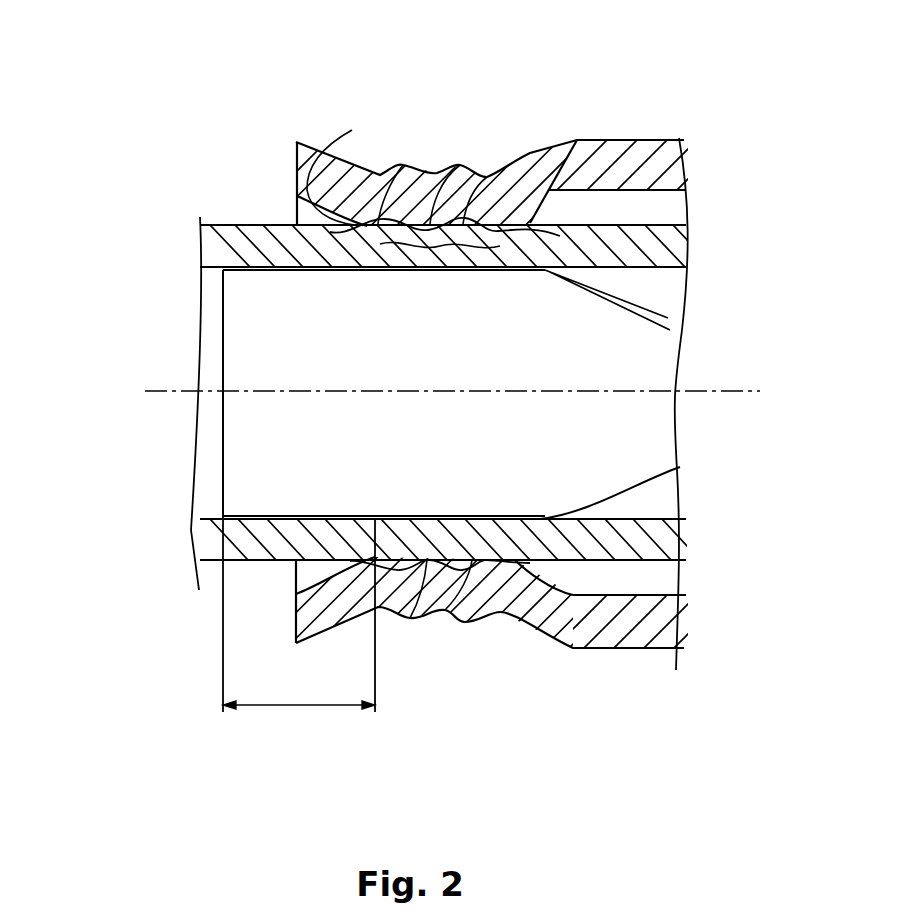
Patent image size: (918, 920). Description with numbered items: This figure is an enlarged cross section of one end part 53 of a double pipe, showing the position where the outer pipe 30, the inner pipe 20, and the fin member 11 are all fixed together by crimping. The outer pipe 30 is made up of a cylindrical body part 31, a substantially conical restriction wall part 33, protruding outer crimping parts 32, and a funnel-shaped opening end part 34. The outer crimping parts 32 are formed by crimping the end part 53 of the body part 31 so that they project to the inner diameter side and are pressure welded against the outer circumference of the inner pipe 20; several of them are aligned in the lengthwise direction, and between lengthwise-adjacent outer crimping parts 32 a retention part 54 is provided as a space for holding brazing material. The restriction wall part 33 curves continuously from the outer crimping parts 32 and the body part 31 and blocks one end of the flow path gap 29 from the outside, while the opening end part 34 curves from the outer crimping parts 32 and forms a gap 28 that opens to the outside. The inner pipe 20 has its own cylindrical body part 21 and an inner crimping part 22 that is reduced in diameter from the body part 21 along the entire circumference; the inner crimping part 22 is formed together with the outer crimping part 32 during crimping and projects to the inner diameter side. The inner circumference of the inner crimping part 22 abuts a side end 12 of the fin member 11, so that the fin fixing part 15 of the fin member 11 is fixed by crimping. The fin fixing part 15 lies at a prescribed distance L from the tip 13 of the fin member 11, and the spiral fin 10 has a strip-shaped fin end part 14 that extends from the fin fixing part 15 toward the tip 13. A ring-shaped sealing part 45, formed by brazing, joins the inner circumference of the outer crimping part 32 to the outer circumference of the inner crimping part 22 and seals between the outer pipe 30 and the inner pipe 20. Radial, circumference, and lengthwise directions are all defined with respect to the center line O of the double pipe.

The spiral fin 10 is at (622, 424).
The fin member 11 is at (68, 276).
The side end of fin member 12 is at (325, 263).
The tip of fin member 13 is at (233, 428).
The fin end part 14 is at (110, 418).
The fin fixing part 15 is at (237, 538).
The inner pipe 20 is at (490, 715).
The body part of inner pipe 21 is at (611, 520).
The inner crimping part 22 is at (423, 617).
The gap 28 is at (298, 210).
The flow path gap 29 is at (650, 207).
The outer pipe 30 is at (353, 73).
The body part of outer pipe 31 is at (603, 160).
The outer crimping part 32 is at (482, 177).
The restriction wall part 33 is at (547, 160).
The opening end part 34 is at (345, 140).
The sealing part 45 is at (309, 165).
The end part of double pipe 53 is at (414, 624).
The retention part 54 is at (340, 234).
The center line O is at (700, 386).
The prescribed distance L is at (299, 614).